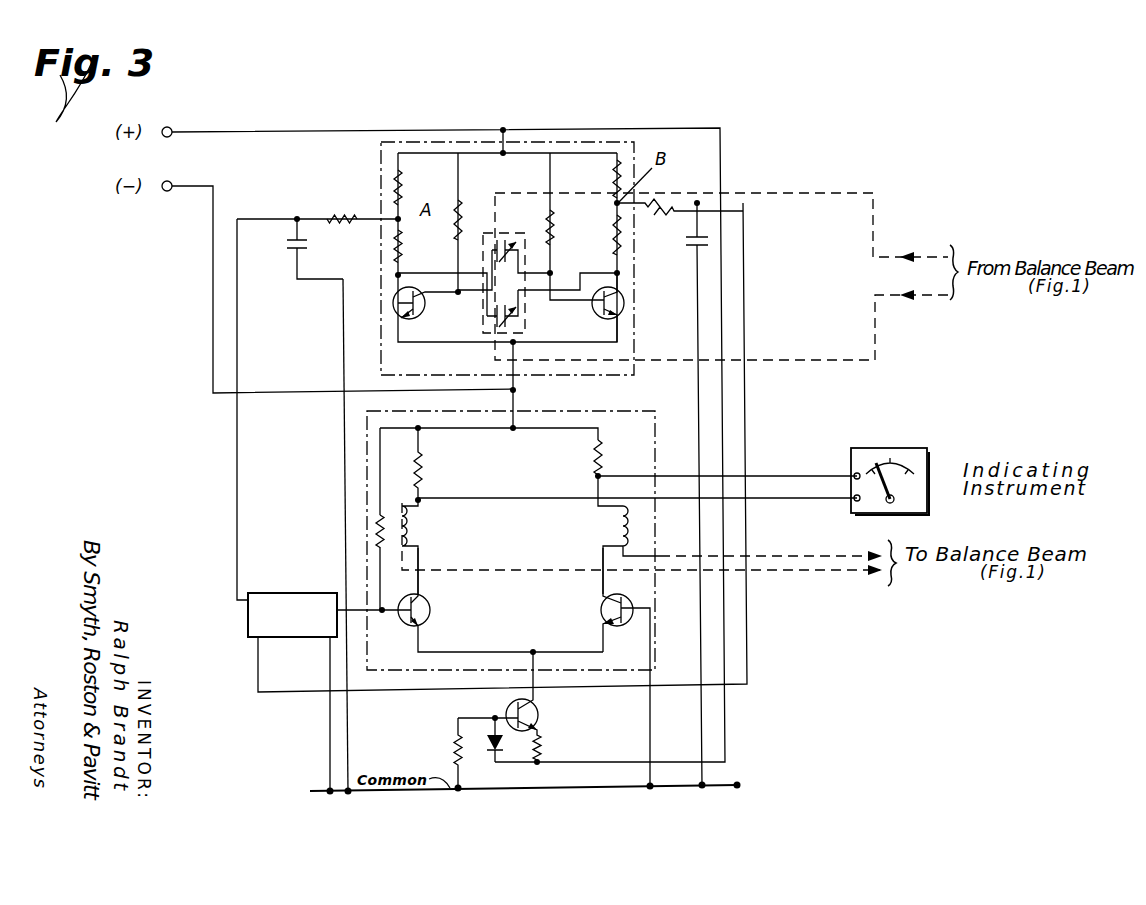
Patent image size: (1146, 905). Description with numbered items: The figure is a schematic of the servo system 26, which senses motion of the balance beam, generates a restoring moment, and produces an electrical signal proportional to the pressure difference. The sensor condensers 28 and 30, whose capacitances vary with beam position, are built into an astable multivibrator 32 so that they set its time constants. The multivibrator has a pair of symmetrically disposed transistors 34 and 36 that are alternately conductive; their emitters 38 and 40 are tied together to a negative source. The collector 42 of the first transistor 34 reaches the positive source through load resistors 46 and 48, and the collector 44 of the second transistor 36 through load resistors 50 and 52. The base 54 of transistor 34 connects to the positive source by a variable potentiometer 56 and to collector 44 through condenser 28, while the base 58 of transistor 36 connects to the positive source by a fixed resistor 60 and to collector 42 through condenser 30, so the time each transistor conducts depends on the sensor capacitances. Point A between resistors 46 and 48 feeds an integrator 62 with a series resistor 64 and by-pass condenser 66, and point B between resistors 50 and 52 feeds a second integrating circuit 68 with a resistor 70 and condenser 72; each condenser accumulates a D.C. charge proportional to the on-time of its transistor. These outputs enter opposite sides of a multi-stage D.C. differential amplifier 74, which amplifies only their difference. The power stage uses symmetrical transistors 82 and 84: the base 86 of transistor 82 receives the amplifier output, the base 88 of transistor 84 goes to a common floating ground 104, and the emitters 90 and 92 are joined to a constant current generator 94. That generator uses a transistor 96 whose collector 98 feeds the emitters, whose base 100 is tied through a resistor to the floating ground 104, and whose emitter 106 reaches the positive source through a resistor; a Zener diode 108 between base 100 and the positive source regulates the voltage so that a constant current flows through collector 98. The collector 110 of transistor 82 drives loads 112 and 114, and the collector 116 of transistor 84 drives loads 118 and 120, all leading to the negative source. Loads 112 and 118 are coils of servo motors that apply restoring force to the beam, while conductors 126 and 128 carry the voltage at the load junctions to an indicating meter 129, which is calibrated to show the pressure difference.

The servo system 26 is at (793, 150).
The sensor condenser 28 is at (527, 323).
The sensor condenser 30 is at (506, 242).
The multivibrator 32 is at (600, 142).
The first transistor 34 is at (418, 321).
The second transistor 36 is at (613, 318).
The emitter 38 is at (395, 308).
The emitter 40 is at (624, 305).
The collector 42 is at (418, 294).
The collector 44 is at (624, 296).
The load resistor 46 is at (403, 197).
The load resistor 48 is at (403, 252).
The load resistor 50 is at (613, 182).
The load resistor 52 is at (613, 226).
The base 54 is at (424, 312).
The variable potentiometer 56 is at (461, 216).
The base 58 is at (567, 294).
The fixed resistor 60 is at (554, 230).
The integrator 62 is at (333, 212).
The resistor 64 is at (345, 215).
The by-pass condenser 66 is at (309, 246).
The second integrating circuit 68 is at (708, 189).
The resistor 70 is at (668, 201).
The condenser 72 is at (692, 247).
The differential amplifier 74 is at (323, 593).
The first transistor 82 is at (432, 611).
The second transistor 84 is at (598, 608).
The base 86 is at (403, 605).
The base 88 is at (628, 601).
The emitter 90 is at (416, 630).
The emitter 92 is at (611, 621).
The constant current generator 94 is at (520, 722).
The transistor 96 is at (545, 711).
The collector 98 is at (526, 703).
The base 100 is at (506, 717).
The common floating ground 104 is at (566, 790).
The emitter 106 is at (498, 748).
The Zener diode 108 is at (487, 755).
The collector 110 is at (421, 600).
The load 112 is at (410, 529).
The load 114 is at (426, 472).
The collector 116 is at (605, 603).
The load 118 is at (618, 525).
The load 120 is at (594, 463).
The conductor 126 is at (485, 499).
The conductor 128 is at (770, 476).
The indicating meter 129 is at (932, 452).